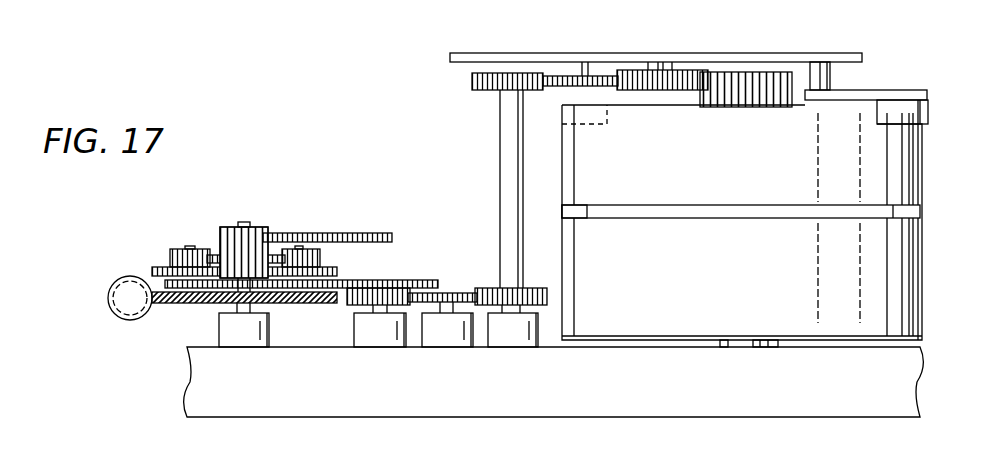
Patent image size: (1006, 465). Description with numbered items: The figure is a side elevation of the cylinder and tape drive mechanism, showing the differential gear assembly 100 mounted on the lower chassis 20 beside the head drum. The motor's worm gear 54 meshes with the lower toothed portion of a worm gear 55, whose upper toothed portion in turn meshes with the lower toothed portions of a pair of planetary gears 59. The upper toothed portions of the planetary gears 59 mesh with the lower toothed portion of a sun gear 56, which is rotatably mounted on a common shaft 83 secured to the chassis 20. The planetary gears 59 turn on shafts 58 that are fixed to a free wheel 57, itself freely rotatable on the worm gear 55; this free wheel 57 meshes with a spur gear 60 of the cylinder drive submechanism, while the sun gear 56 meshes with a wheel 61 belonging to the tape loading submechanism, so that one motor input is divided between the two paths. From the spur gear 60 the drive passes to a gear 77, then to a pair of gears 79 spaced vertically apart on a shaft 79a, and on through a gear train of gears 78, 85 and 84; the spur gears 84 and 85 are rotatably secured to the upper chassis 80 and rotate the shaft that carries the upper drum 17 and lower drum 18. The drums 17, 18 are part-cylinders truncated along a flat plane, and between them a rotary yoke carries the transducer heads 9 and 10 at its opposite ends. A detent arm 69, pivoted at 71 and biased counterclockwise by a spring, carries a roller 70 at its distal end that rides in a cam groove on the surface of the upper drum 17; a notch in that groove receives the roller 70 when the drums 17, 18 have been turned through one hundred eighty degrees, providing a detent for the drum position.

The transducer head 9 is at (565, 212).
The transducer head 10 is at (918, 212).
The upper drum 17 is at (890, 160).
The lower drum 18 is at (898, 280).
The lower chassis 20 is at (277, 407).
The worm gear 54 is at (108, 298).
The worm gear 55 is at (182, 305).
The sun gear 56 is at (228, 226).
The free wheel 57 is at (163, 282).
The shaft 58 is at (190, 246).
The planetary gear 59 is at (178, 264).
The spur gear 60 is at (404, 288).
The wheel 61 is at (283, 233).
The detent arm 69 is at (877, 90).
The roller 70 is at (928, 112).
The pivot 71 is at (820, 65).
The gear 77 is at (447, 293).
The gear 78 is at (557, 76).
The gear 79 is at (490, 288).
The shaft 79a is at (510, 157).
The upper chassis 80 is at (497, 53).
The common shaft 83 is at (244, 222).
The spur gear 84 is at (738, 72).
The spur gear 85 is at (640, 70).
The differential gear assembly 100 is at (231, 148).